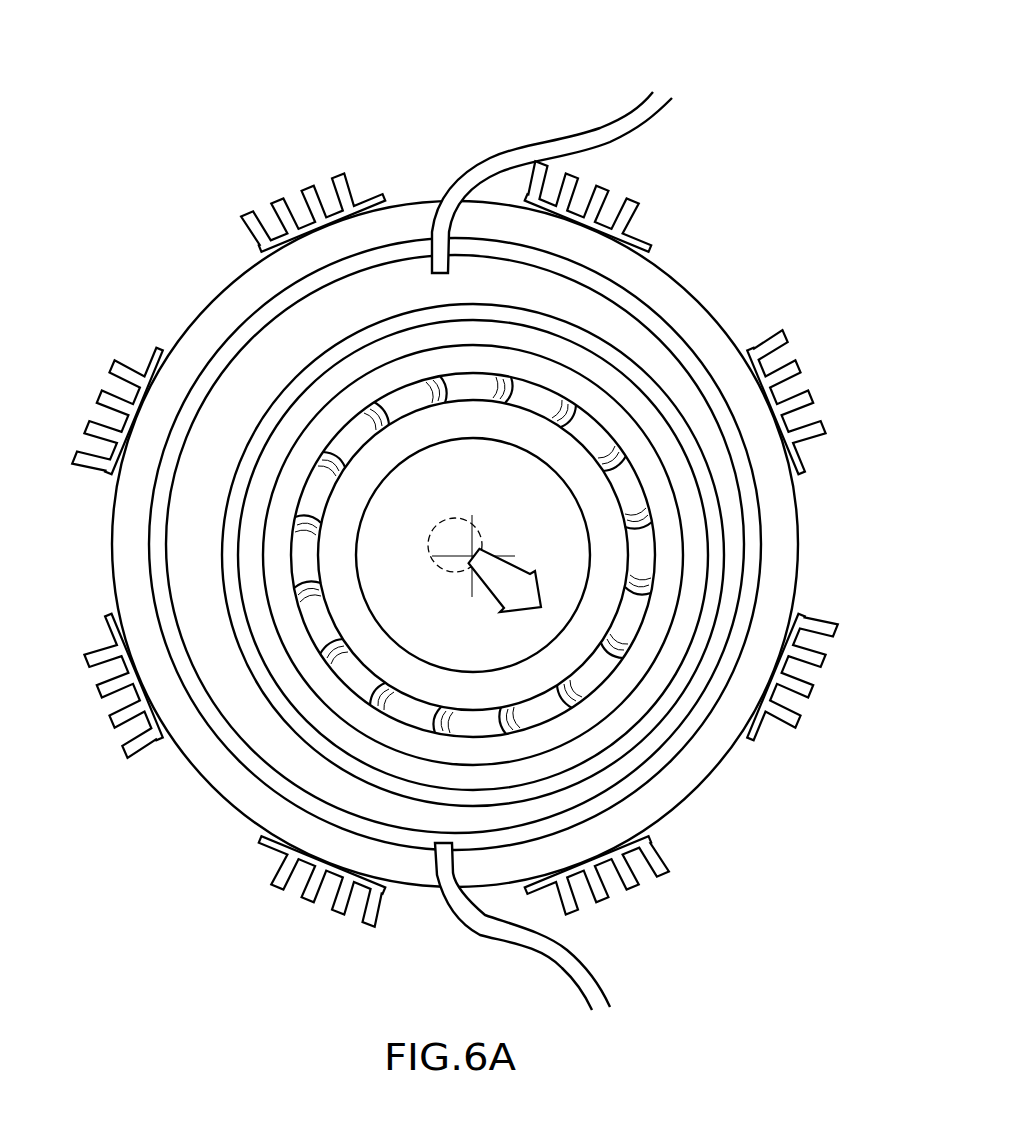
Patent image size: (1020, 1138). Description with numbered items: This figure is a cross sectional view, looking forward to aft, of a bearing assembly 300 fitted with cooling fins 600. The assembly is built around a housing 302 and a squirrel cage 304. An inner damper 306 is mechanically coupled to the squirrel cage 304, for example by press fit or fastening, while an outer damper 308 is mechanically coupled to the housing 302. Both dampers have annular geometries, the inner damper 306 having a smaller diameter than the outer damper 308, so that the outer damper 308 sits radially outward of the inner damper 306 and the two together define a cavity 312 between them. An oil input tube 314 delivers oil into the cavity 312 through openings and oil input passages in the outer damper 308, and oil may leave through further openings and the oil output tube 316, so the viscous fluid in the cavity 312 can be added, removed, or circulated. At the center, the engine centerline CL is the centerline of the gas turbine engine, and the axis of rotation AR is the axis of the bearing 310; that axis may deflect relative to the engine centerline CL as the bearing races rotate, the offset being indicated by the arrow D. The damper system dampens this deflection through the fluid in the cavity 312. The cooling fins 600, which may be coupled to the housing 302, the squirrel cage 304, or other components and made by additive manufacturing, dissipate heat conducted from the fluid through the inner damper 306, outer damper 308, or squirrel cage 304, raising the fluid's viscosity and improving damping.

The bearing assembly 300 is at (189, 91).
The housing 302 is at (371, 229).
The squirrel cage 304 is at (430, 343).
The inner damper 306 is at (620, 362).
The outer damper 308 is at (632, 307).
The bearing 310 is at (347, 437).
The cavity 312 is at (283, 342).
The oil input tube 314 is at (591, 143).
The oil output tube 316 is at (583, 975).
The cooling fins 600 is at (301, 207).
The engine centerline CL is at (455, 518).
The axis of rotation AR is at (473, 585).
The offset direction D is at (498, 593).